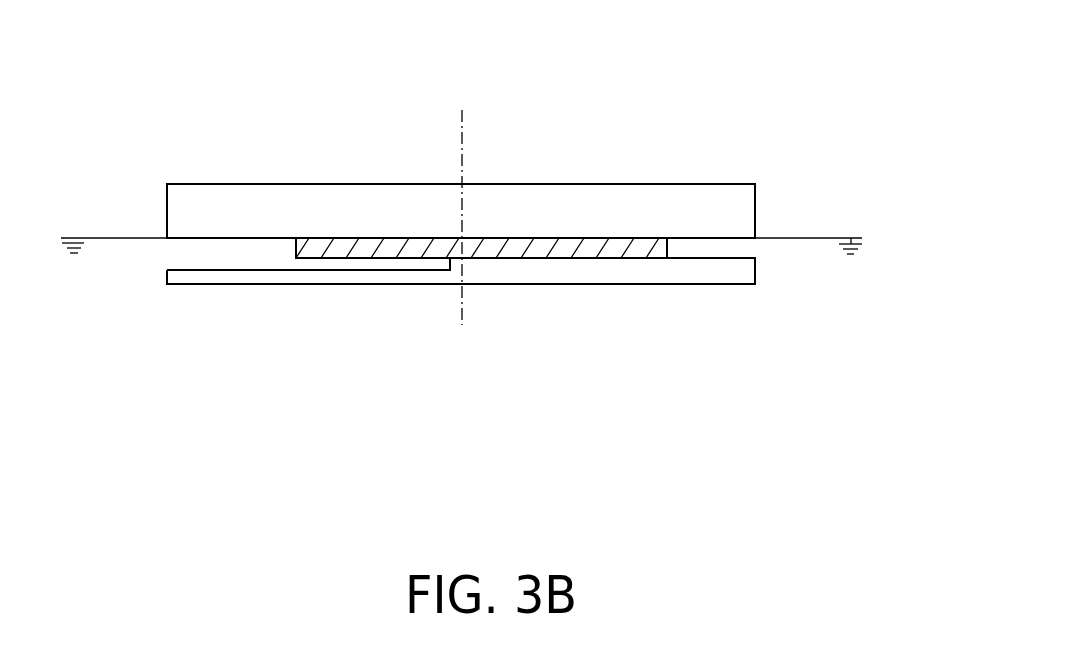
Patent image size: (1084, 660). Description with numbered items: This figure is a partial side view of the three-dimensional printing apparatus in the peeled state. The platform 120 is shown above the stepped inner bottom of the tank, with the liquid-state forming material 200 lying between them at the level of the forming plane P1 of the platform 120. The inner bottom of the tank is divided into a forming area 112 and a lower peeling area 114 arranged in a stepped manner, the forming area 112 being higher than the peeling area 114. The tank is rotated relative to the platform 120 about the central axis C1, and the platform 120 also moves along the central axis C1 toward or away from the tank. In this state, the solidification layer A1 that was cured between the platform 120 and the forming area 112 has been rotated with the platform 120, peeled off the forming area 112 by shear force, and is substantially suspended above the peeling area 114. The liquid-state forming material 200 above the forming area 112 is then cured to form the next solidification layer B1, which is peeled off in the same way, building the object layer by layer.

The platform 120 is at (740, 200).
The liquid-state forming material 200 is at (853, 238).
The central axis C1 is at (464, 196).
The forming area 112 is at (640, 280).
The peeling area 114 is at (287, 277).
The solidification layer A1 is at (385, 252).
The solidification layer B1 is at (540, 250).
The forming plane P1 is at (717, 239).